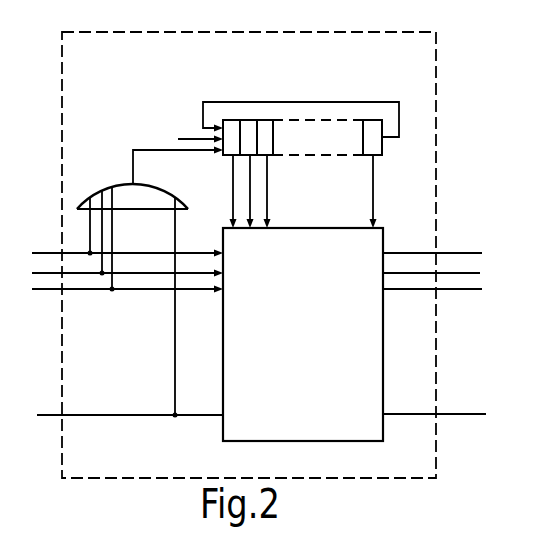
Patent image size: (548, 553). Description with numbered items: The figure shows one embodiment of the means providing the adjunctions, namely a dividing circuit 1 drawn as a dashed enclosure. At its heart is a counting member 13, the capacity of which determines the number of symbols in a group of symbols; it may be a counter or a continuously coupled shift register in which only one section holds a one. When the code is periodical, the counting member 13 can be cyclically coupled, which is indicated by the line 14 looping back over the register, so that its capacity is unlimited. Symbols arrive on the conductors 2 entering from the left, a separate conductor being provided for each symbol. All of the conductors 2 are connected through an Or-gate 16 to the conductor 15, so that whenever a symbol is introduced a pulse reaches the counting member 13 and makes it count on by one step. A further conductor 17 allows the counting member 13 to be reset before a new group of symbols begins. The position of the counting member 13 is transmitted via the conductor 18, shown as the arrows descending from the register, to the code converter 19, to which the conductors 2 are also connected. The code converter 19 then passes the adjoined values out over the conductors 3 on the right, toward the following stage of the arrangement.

The dividing circuit 1 is at (334, 27).
The conductors 2 is at (45, 289).
The conductors 3 is at (468, 289).
The counting member 13 is at (328, 133).
The line 14 is at (299, 102).
The conductor 15 is at (145, 149).
The Or-gate 16 is at (125, 196).
The conductor 17 is at (187, 135).
The conductor 18 is at (267, 206).
The code converter 19 is at (347, 253).